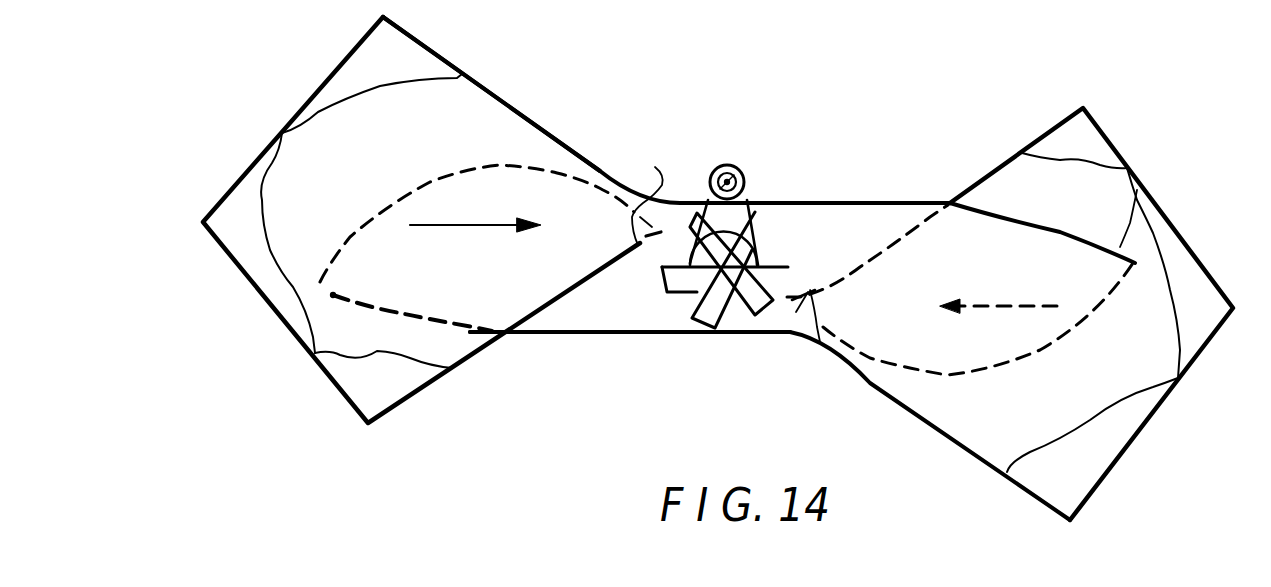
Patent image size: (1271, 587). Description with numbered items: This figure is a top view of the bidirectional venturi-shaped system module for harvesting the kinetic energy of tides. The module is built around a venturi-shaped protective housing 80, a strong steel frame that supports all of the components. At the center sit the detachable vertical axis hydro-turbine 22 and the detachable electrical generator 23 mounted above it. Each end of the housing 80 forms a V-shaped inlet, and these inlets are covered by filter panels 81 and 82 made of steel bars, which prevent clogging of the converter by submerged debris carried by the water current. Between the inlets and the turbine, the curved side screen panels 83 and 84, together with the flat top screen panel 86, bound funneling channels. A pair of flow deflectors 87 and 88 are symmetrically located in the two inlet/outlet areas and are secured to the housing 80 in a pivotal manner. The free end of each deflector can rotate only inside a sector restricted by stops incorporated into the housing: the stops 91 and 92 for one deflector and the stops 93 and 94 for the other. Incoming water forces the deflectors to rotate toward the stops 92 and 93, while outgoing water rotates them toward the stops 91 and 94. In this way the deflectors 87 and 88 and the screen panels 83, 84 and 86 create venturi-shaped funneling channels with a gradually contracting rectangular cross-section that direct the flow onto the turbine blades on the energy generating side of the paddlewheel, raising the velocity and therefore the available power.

The vertical axis hydro-turbine 22 is at (680, 278).
The electrical generator 23 is at (744, 182).
The protective housing 80 is at (488, 118).
The filter panel 81 is at (282, 134).
The filter panel 82 is at (1100, 127).
The curved side screen panel 83 is at (735, 336).
The curved side screen panel 84 is at (560, 144).
The flat top screen panel 86 is at (355, 370).
The flow deflector 87 is at (534, 310).
The flow deflector 88 is at (912, 228).
The stop 91 is at (333, 295).
The stop 92 is at (644, 196).
The stop 93 is at (817, 343).
The stop 94 is at (1137, 191).